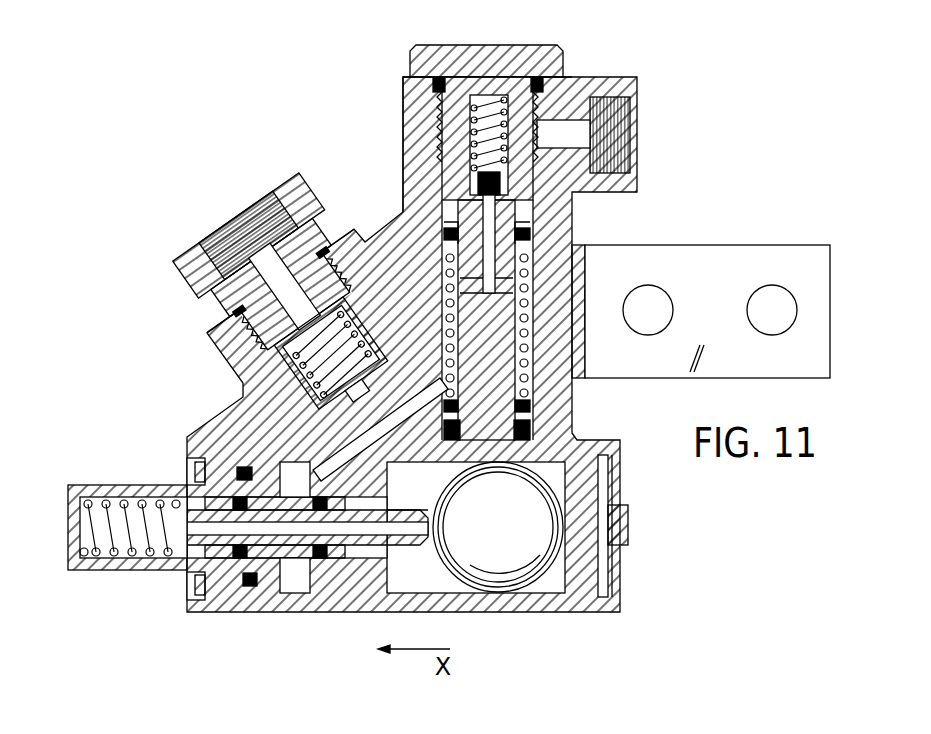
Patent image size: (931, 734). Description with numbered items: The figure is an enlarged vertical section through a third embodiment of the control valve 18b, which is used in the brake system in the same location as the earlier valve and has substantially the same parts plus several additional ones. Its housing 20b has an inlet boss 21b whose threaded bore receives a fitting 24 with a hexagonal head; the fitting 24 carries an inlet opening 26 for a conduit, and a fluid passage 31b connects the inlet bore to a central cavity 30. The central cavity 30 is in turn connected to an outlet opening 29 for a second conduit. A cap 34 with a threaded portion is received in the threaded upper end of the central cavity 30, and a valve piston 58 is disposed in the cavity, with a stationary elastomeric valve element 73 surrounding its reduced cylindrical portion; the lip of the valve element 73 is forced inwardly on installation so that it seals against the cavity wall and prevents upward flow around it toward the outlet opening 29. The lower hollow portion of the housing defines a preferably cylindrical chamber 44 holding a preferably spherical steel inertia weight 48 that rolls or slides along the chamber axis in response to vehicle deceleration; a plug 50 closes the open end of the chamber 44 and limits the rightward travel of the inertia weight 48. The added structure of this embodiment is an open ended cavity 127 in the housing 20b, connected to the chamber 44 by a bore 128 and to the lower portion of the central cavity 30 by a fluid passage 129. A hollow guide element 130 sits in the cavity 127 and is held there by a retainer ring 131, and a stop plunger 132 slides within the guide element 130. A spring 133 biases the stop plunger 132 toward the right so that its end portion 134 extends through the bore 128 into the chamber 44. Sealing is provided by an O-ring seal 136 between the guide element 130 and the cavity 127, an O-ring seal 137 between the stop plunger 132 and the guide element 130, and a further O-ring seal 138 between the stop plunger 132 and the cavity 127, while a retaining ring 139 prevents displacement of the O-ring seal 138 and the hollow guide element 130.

The control valve 18b is at (118, 390).
The housing 20b is at (403, 97).
The inlet boss 21b is at (208, 343).
The fitting 24 is at (324, 216).
The inlet opening 26 is at (264, 204).
The outlet opening 29 is at (632, 165).
The central cavity 30 is at (530, 394).
The fluid passage 31b is at (340, 405).
The cap 34 is at (532, 55).
The chamber 44 is at (544, 600).
The inertia weight 48 is at (488, 540).
The plug 50 is at (630, 522).
The valve piston 58 is at (478, 350).
The elastomeric valve element 73 is at (530, 238).
The open ended cavity 127 is at (190, 592).
The bore 128 is at (284, 513).
The fluid passage 129 is at (430, 388).
The hollow guide element 130 is at (90, 573).
The retainer ring 131 is at (190, 467).
The stop plunger 132 is at (302, 513).
The spring 133 is at (105, 500).
The end portion 134 is at (402, 546).
The O-ring seal 136 is at (251, 590).
The O-ring seal 137 is at (240, 553).
The O-ring seal 138 is at (322, 556).
The retaining ring 139 is at (292, 575).